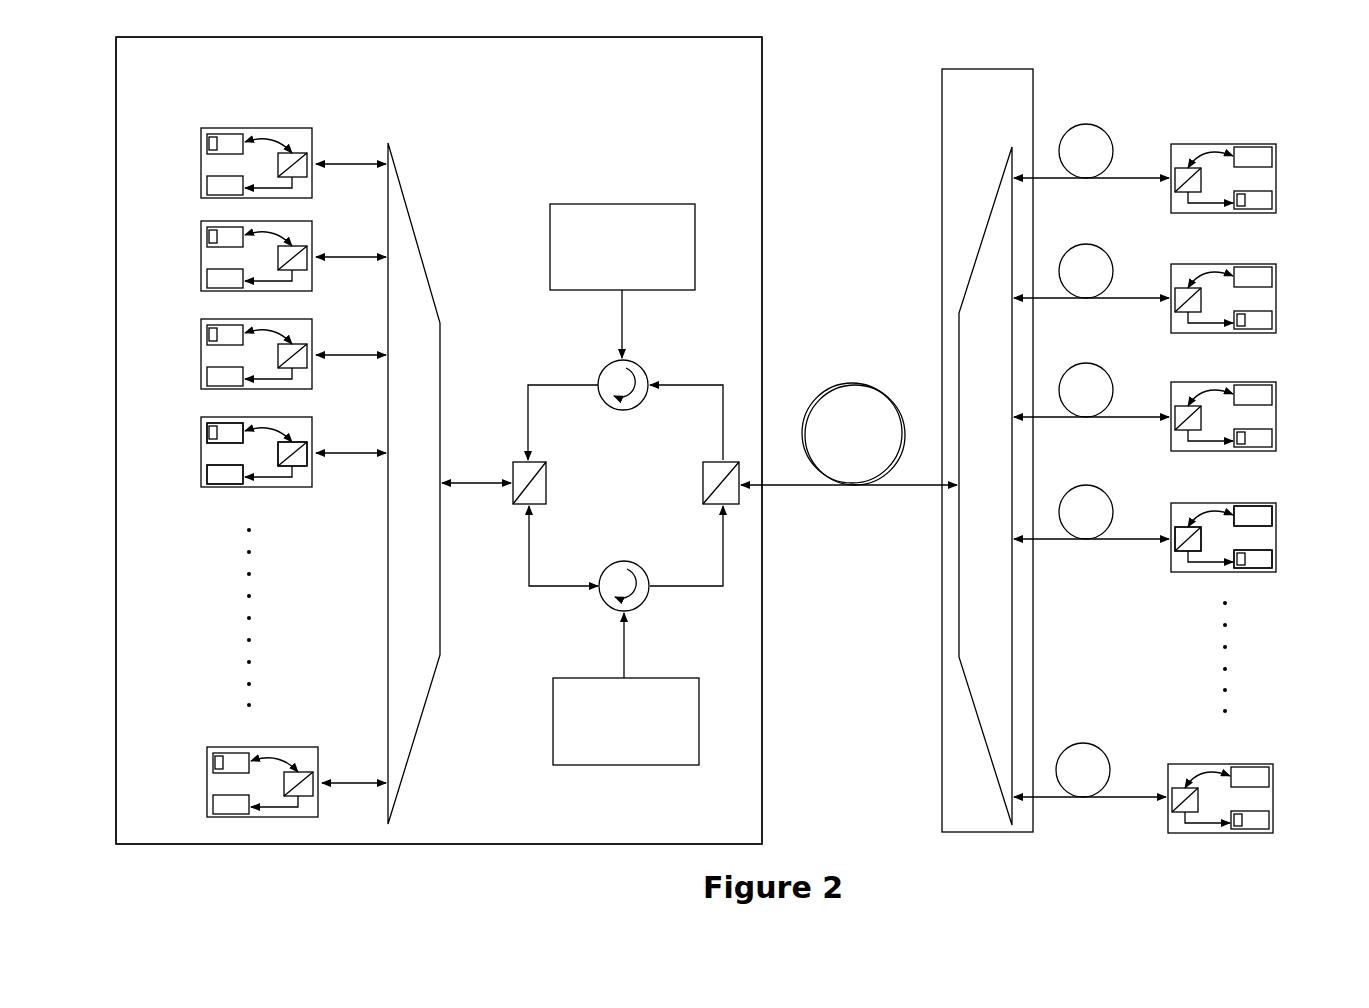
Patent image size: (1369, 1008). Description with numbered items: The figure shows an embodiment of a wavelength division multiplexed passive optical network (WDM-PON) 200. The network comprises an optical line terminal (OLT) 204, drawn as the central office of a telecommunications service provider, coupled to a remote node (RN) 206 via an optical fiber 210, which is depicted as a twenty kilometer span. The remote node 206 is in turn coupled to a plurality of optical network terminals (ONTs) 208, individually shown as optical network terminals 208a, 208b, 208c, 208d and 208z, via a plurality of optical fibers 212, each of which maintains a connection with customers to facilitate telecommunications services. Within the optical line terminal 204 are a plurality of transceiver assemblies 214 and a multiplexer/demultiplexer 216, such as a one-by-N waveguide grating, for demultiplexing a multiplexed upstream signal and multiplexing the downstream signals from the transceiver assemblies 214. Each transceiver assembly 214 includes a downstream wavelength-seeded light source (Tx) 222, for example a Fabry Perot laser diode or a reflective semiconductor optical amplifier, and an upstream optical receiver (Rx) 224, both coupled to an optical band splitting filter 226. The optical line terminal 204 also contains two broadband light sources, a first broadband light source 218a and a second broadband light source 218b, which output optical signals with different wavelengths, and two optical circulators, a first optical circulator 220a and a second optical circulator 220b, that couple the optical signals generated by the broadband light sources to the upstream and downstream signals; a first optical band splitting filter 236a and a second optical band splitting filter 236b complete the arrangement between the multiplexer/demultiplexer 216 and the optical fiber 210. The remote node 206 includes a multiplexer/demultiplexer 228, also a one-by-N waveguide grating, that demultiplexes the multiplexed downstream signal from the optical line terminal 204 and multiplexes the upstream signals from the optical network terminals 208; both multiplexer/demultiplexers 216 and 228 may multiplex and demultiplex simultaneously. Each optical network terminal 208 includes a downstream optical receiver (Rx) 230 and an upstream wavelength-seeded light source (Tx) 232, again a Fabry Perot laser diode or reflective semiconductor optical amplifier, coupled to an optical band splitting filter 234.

The wavelength division multiplexed passive optical network 200 is at (482, 427).
The optical line terminal 204 is at (439, 440).
The remote node 206 is at (987, 450).
The optical network terminals 208 is at (1274, 443).
The optical network terminal 208a is at (1262, 143).
The optical network terminal 208b is at (1262, 263).
The optical network terminal 208c is at (1262, 381).
The optical network terminal 208d is at (1262, 502).
The optical network terminal 208z is at (1272, 763).
The optical fiber 210 is at (866, 382).
The optical fibers 212 is at (1105, 137).
The transceiver assemblies 214 is at (312, 136).
The multiplexer/demultiplexer 216 is at (441, 408).
The first broadband light source 218a is at (640, 766).
The second broadband light source 218b is at (627, 203).
The first optical circulator 220a is at (603, 607).
The second optical circulator 220b is at (602, 372).
The downstream wavelength-seeded light source 222 is at (220, 419).
The upstream optical receiver 224 is at (228, 482).
The optical band splitting filter 226 is at (297, 462).
The multiplexer/demultiplexer 228 is at (960, 620).
The downstream optical receiver 230 is at (1255, 571).
The upstream wavelength-seeded light source 232 is at (1250, 503).
The optical band splitting filter 234 is at (1185, 551).
The first optical band splitting filter 236a is at (517, 505).
The second optical band splitting filter 236b is at (712, 506).